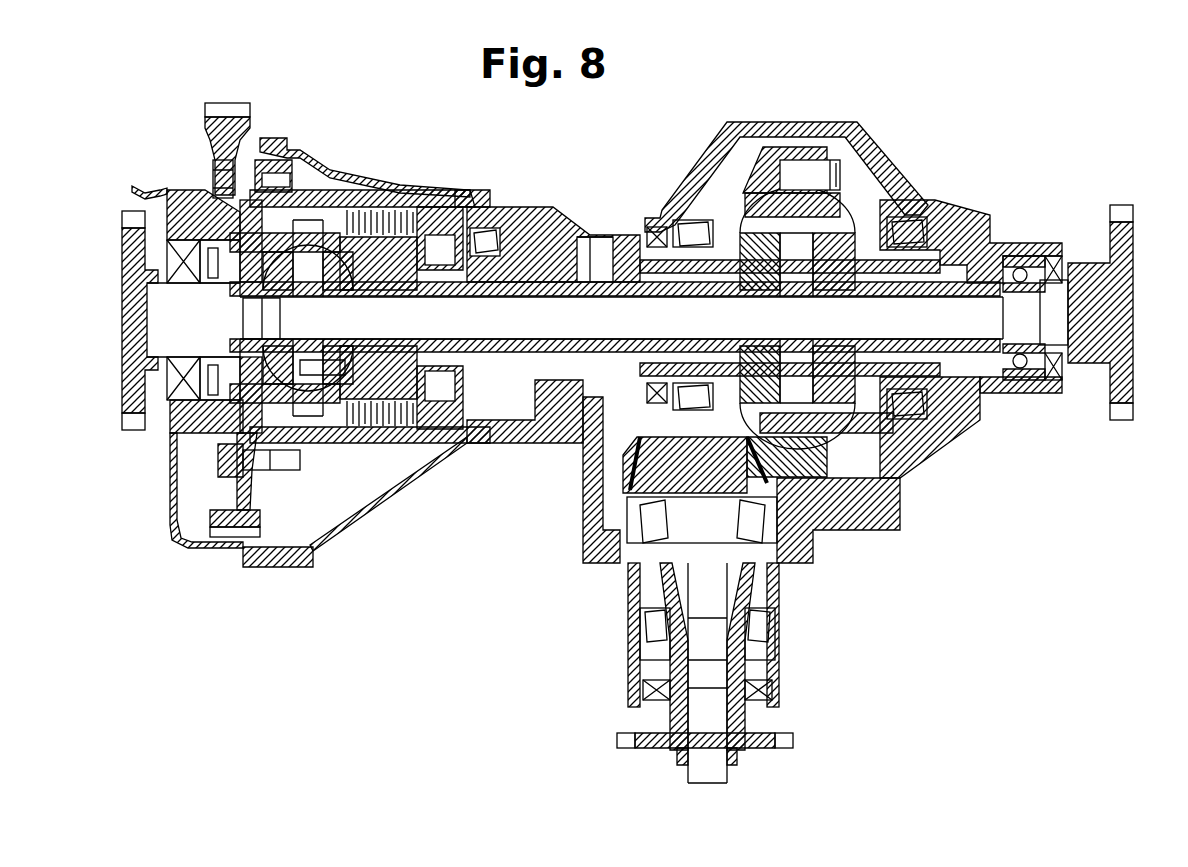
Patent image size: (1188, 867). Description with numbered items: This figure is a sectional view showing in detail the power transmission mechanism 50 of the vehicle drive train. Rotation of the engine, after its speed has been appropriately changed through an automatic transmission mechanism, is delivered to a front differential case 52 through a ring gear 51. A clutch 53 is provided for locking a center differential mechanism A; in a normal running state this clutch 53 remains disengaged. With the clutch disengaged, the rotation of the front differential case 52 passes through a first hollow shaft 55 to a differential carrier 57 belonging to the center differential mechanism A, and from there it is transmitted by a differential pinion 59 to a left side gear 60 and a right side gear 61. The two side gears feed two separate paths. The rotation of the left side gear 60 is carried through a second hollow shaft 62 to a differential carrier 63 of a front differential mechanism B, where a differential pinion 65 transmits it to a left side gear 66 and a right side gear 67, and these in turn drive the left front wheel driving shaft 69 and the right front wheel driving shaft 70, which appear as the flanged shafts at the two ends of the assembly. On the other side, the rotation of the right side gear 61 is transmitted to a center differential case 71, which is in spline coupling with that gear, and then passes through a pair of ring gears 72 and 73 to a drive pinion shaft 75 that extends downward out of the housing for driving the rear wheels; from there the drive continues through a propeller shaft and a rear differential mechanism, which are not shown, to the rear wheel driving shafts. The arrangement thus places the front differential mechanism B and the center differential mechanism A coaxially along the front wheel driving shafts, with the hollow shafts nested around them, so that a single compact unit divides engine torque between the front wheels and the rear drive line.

The differential assembly 50 is at (276, 656).
The ring gear 51 is at (247, 122).
The front differential case 52 is at (330, 191).
The clutch 53 is at (463, 190).
The first hollow shaft 55 is at (578, 263).
The differential carrier 57 is at (725, 232).
The differential pinion 59 is at (737, 227).
The left side gear 60 is at (893, 430).
The right side gear 61 is at (975, 393).
The second hollow shaft 62 is at (608, 284).
The differential carrier 63 is at (313, 440).
The differential pinion 65 is at (240, 428).
The left side gear 66 is at (183, 432).
The right side gear 67 is at (407, 390).
The left front wheel driving shaft 69 is at (122, 317).
The right front wheel driving shaft 70 is at (1137, 318).
The center differential case 71 is at (887, 210).
The ring gear 72 is at (763, 153).
The ring gear 73 is at (667, 472).
The drive pinion shaft 75 is at (713, 712).
The center differential mechanism A is at (802, 246).
The front differential mechanism B is at (310, 378).